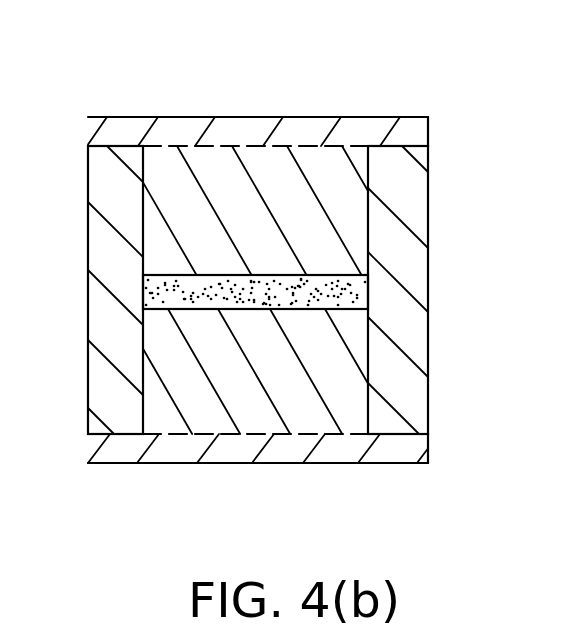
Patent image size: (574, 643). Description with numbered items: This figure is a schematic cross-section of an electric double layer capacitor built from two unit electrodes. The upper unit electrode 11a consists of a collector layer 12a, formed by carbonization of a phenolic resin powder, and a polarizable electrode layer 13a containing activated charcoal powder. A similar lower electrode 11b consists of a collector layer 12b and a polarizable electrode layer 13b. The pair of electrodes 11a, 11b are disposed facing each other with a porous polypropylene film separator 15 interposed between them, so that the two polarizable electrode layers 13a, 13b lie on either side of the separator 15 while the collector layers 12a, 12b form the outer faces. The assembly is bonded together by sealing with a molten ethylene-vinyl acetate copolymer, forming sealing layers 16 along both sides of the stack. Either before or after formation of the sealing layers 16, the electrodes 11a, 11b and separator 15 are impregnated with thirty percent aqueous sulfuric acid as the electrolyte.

The unit electrode 11a is at (343, 73).
The electrode 11b is at (332, 511).
The collector layer 12a is at (241, 129).
The collector layer 12b is at (221, 444).
The polarizable electrode layer 13a is at (316, 157).
The polarizable electrode layer 13b is at (303, 420).
The porous polypropylene film separator 15 is at (362, 294).
The sealing layer 16 is at (103, 200).